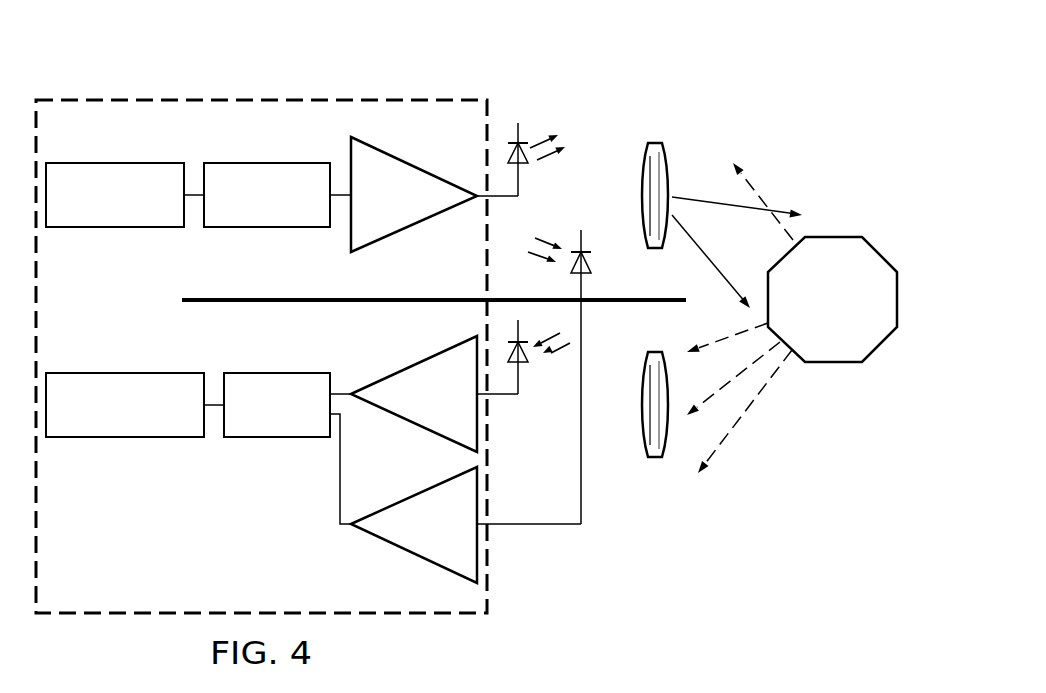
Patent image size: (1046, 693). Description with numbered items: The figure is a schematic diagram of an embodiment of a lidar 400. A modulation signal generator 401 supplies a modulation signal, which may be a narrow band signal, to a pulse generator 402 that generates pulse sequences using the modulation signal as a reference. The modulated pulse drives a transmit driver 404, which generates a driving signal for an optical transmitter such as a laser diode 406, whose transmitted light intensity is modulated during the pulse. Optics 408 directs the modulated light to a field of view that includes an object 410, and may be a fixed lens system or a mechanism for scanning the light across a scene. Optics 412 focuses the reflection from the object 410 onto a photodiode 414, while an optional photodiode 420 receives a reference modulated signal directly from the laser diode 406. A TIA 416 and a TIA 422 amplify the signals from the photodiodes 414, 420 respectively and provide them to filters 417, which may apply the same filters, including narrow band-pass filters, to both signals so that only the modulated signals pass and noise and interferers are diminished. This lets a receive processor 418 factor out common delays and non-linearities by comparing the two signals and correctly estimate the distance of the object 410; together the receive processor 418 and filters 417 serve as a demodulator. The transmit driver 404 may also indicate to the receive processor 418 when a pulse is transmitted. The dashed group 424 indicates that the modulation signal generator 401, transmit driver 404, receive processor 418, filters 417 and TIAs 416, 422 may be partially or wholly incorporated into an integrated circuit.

The lidar 400 is at (608, 52).
The modulation signal generator 401 is at (115, 163).
The pulse generator 402 is at (270, 163).
The transmit driver 404 is at (412, 165).
The laser diode 406 is at (524, 165).
The optics 408 is at (656, 142).
The object 410 is at (815, 314).
The optics 412 is at (653, 458).
The photodiode 414 is at (523, 363).
The TIA 416 is at (410, 424).
The filters 417 is at (277, 438).
The receive processor 418 is at (126, 438).
The photodiode 420 is at (593, 262).
The TIA 422 is at (410, 556).
The group 424 is at (178, 92).